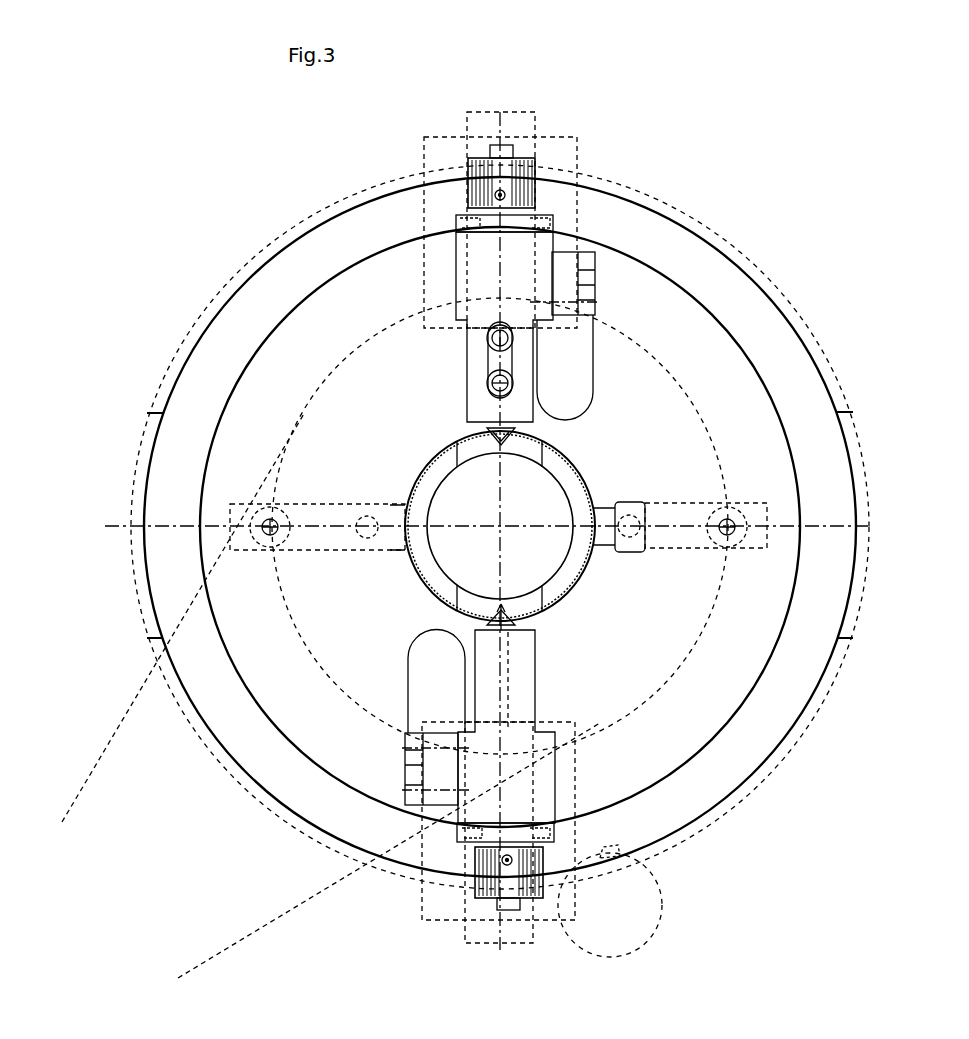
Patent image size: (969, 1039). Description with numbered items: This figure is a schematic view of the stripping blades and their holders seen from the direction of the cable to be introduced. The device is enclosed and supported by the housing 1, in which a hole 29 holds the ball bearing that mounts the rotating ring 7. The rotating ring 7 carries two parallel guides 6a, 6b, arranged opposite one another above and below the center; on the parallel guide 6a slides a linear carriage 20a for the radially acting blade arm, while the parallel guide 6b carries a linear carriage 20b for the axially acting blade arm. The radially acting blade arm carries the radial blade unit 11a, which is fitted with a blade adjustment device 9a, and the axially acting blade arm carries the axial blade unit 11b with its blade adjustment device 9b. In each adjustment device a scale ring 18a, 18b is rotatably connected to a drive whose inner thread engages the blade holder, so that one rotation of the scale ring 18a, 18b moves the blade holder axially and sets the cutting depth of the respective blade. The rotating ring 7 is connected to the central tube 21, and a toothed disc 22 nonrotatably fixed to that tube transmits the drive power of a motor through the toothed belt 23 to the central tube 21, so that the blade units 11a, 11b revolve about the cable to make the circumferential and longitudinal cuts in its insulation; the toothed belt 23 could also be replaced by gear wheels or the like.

The housing 1 is at (166, 212).
The hole 29 is at (300, 227).
The rotating ring 7 is at (623, 213).
The toothed belt 23 is at (300, 901).
The toothed disc 22 is at (612, 670).
The central tube 21 is at (583, 490).
The linear carriage 20a is at (552, 143).
The parallel guide 6a is at (527, 147).
The scale ring 18a is at (523, 178).
The blade adjustment device 9a is at (510, 292).
The radial blade unit 11a is at (525, 436).
The linear carriage 20b is at (547, 907).
The parallel guide 6b is at (472, 933).
The scale ring 18b is at (490, 873).
The blade adjustment device 9b is at (520, 758).
The axial blade unit 11b is at (522, 614).